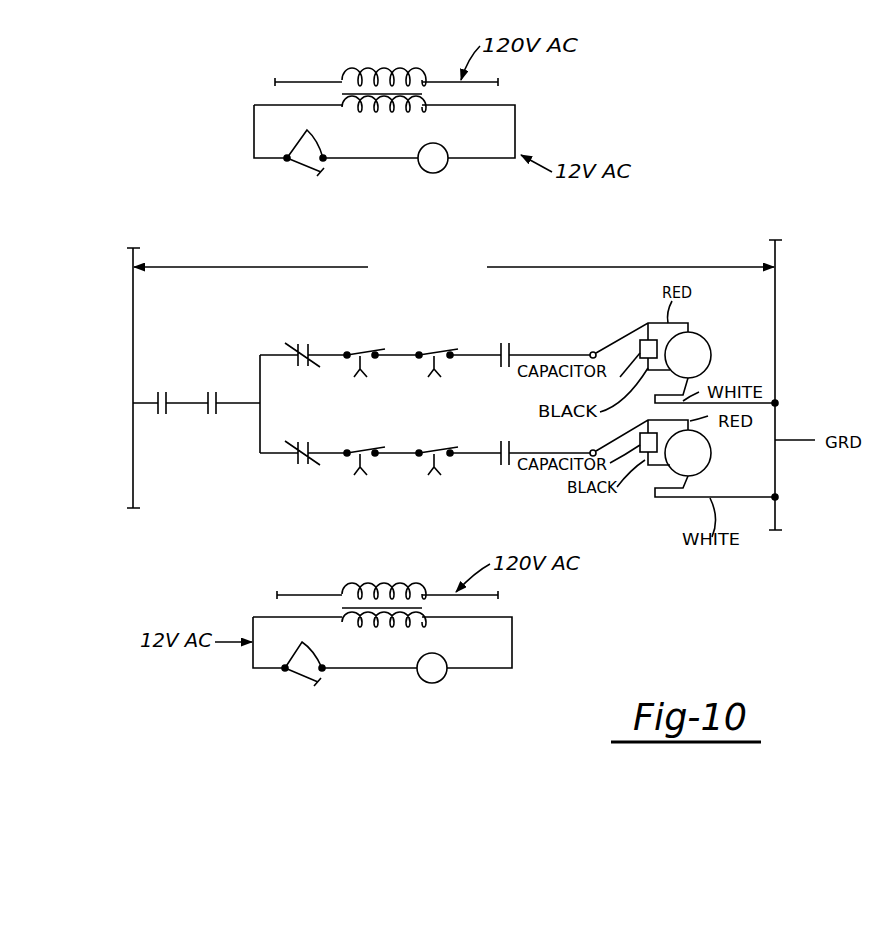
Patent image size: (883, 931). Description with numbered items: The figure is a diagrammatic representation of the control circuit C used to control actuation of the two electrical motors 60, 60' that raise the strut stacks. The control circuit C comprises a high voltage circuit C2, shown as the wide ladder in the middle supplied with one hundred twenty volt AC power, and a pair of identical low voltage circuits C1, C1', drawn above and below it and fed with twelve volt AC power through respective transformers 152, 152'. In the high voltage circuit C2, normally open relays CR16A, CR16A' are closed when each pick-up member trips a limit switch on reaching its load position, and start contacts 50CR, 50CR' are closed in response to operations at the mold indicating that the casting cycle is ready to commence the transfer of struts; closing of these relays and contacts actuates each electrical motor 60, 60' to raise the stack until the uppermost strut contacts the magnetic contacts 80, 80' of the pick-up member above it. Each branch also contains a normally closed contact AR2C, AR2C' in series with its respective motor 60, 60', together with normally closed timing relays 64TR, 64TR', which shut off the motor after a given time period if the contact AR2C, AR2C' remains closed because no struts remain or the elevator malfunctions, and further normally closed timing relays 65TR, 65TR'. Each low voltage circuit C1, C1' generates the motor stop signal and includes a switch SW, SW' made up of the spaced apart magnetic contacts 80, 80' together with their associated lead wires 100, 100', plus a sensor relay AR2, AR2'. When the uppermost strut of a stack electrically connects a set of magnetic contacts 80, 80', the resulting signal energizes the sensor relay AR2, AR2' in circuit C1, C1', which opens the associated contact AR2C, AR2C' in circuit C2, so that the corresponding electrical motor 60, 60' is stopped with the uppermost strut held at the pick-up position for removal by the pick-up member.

The control circuit C is at (136, 188).
The transformer 152 is at (386, 67).
The low voltage circuit C1 is at (445, 131).
The lead wires 100 is at (313, 155).
The magnetic contacts 80 is at (305, 131).
The switch SW is at (293, 191).
The sensor relay AR2 is at (468, 174).
The high voltage circuit C2 is at (112, 418).
The relay CR16A is at (174, 434).
The relay CR16A' is at (209, 379).
The contact AR2C is at (318, 333).
The timing relay 64TR is at (355, 380).
The timing relay 65TR is at (447, 380).
The start contact 50CR is at (537, 336).
The electrical motor 60 is at (688, 355).
The contact AR2C' is at (289, 486).
The timing relay 64TR' is at (367, 489).
The timing relay 65TR' is at (450, 489).
The start contact 50CR' is at (542, 479).
The electrical motor 60' is at (688, 453).
The low voltage circuit C1' is at (440, 642).
The transformer 152' is at (384, 584).
The lead wires 100' is at (305, 664).
The magnetic contacts 80' is at (303, 644).
The switch SW' is at (294, 697).
The sensor relay AR2' is at (454, 684).